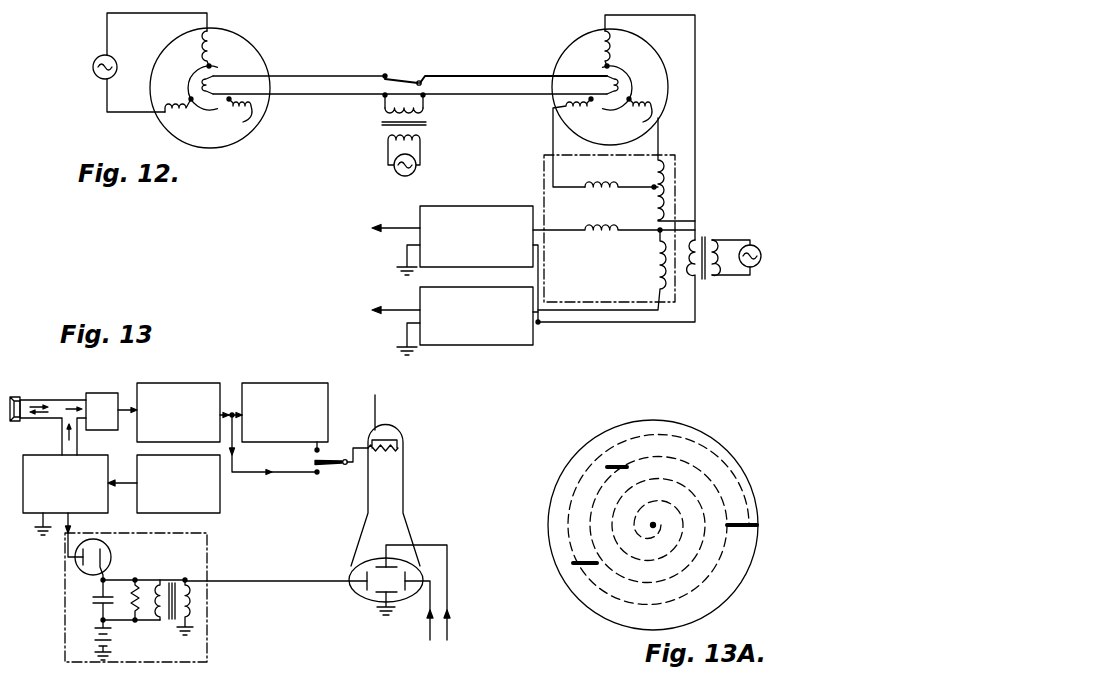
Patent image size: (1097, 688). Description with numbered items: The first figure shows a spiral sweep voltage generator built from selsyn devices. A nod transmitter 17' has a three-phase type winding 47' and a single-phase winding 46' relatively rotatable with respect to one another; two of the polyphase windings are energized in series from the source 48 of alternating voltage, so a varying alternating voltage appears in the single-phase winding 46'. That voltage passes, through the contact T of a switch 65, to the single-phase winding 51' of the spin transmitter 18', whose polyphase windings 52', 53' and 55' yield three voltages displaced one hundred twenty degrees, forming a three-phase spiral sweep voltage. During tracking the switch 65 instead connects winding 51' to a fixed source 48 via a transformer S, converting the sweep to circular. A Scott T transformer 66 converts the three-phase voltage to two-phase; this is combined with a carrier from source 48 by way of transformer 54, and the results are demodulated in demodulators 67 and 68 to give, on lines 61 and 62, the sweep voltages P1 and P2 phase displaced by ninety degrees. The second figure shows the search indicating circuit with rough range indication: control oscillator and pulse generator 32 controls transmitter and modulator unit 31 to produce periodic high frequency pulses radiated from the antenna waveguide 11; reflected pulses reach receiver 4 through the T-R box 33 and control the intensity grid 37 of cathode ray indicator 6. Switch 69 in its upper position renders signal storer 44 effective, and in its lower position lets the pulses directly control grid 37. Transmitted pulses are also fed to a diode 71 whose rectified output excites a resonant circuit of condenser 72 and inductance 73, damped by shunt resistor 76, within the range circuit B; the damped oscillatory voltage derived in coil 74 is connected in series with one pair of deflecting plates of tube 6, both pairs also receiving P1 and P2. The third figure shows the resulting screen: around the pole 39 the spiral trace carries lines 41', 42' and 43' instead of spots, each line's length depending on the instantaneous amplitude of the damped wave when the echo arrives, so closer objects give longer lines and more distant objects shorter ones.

In FIG. 12, the source of alternating voltage 48 is at (95, 77).
In FIG. 12, the three-phase type winding 47' is at (212, 76).
In FIG. 12, the single-phase winding 46' is at (225, 75).
In FIG. 12, the nod transmitter 17' is at (199, 89).
In FIG. 12, the switch contact T is at (410, 75).
In FIG. 12, the switch 65 is at (400, 80).
In FIG. 12, the transformer S is at (371, 108).
In FIG. 12, the polyphase winding 52' is at (634, 44).
In FIG. 12, the spin transmitter 18' is at (623, 127).
In FIG. 12, the single-phase winding 51' is at (589, 75).
In FIG. 12, the polyphase winding 53' is at (640, 93).
In FIG. 12, the polyphase winding 55' is at (546, 143).
In FIG. 12, the Scott T transformer 66 is at (676, 190).
In FIG. 12, the transformer 54 is at (712, 238).
In FIG. 12, the demodulator 67 is at (483, 206).
In FIG. 12, the demodulator 68 is at (487, 345).
In FIG. 12, the line 61 is at (378, 228).
In FIG. 12, the line 62 is at (378, 311).
In FIG. 12, the spiral sweep voltage P1 is at (351, 235).
In FIG. 13, the spiral sweep voltage P1 is at (426, 652).
In FIG. 12, the spiral sweep voltage P2 is at (351, 312).
In FIG. 13, the spiral sweep voltage P2 is at (453, 655).
In FIG. 13, the antenna waveguide 11 is at (40, 400).
In FIG. 13, the T-R box 33 is at (104, 393).
In FIG. 13, the receiver 4 is at (180, 383).
In FIG. 13, the signal storer 44 is at (288, 383).
In FIG. 13, the transmitter and modulator unit 31 is at (23, 512).
In FIG. 13, the control oscillator and pulse generator 32 is at (222, 497).
In FIG. 13, the switch 69 is at (334, 474).
In FIG. 13, the intensity grid 37 is at (400, 446).
In FIG. 13, the cathode ray indicator 6 is at (405, 517).
In FIG. 13, the diode 71 is at (112, 560).
In FIG. 13, the condenser 72 is at (92, 598).
In FIG. 13, the shunt resistor 76 is at (138, 622).
In FIG. 13, the inductance 73 is at (162, 586).
In FIG. 13, the coil 74 is at (192, 592).
In FIG. 13, the blanking circuit B is at (210, 625).
In FIG. 13A, the screen center or pole 39 is at (650, 525).
In FIG. 13A, the line indication 42' is at (582, 452).
In FIG. 13A, the line indication 41' is at (758, 507).
In FIG. 13A, the line indication 43' is at (567, 599).